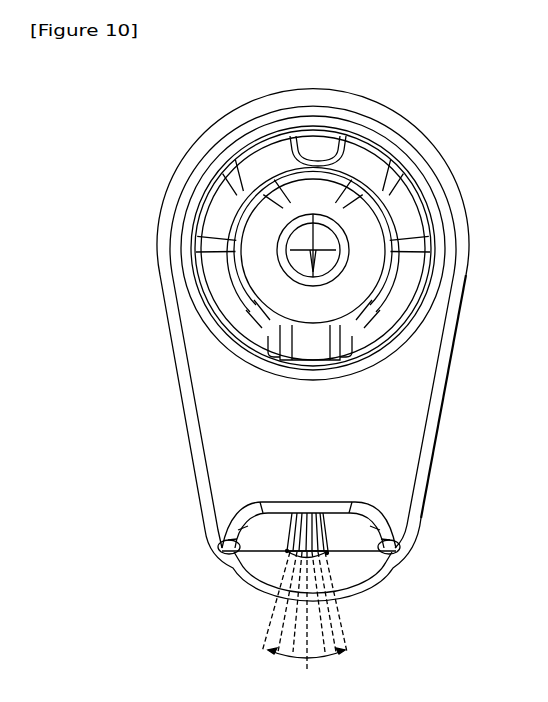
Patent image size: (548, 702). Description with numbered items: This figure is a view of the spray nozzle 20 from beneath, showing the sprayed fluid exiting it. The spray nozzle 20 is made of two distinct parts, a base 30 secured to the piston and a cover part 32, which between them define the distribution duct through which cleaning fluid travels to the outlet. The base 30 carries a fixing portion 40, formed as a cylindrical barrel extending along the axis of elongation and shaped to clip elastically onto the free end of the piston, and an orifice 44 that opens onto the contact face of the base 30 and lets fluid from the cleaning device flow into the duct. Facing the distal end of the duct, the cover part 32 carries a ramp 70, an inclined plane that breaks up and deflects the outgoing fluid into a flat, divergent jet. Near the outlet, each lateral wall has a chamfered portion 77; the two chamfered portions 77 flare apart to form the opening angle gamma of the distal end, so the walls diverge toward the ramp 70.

The spray nozzle 20 is at (471, 483).
The base 30 is at (213, 418).
The cover part 32 is at (383, 558).
The fixing portion 40 is at (380, 292).
The orifice 44 is at (303, 242).
The ramp 70 is at (262, 565).
The chamfered portion 77 is at (292, 524).